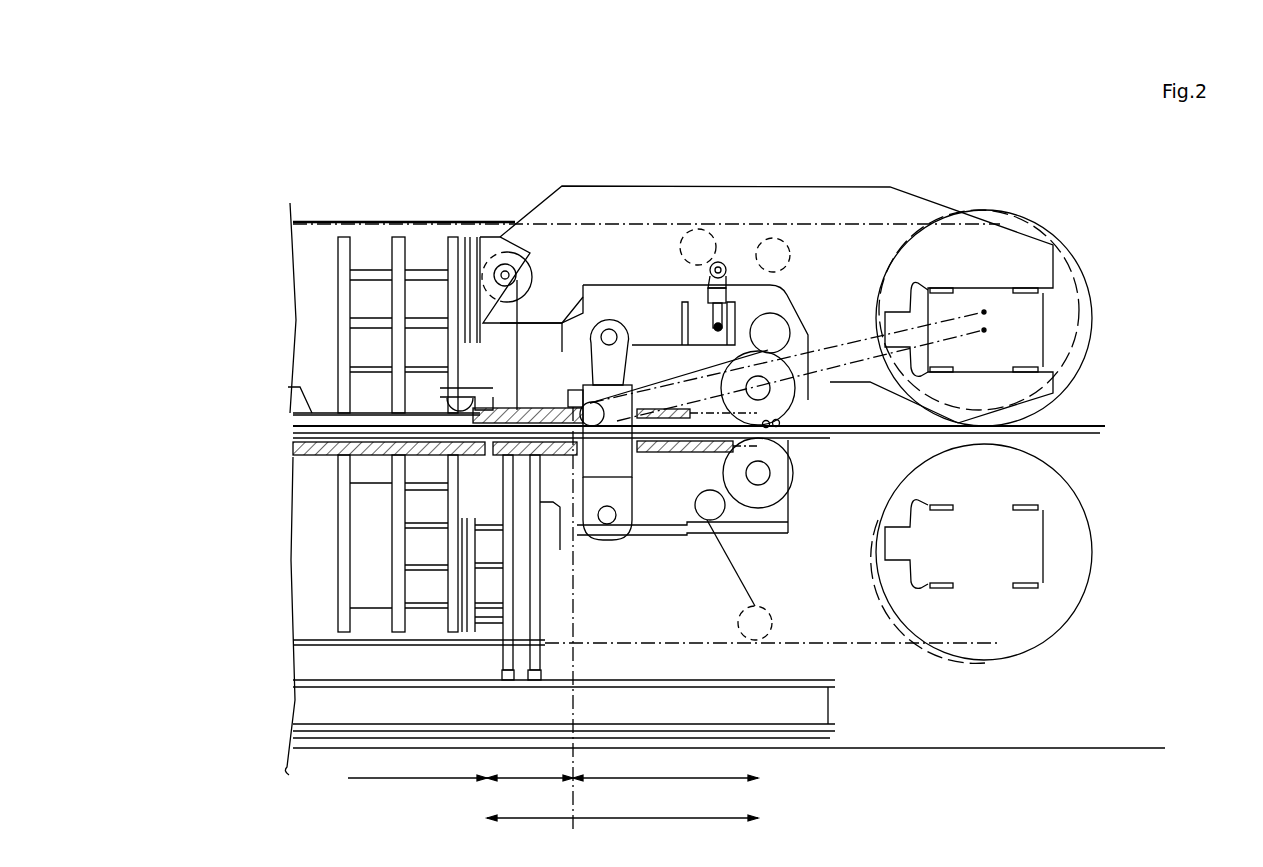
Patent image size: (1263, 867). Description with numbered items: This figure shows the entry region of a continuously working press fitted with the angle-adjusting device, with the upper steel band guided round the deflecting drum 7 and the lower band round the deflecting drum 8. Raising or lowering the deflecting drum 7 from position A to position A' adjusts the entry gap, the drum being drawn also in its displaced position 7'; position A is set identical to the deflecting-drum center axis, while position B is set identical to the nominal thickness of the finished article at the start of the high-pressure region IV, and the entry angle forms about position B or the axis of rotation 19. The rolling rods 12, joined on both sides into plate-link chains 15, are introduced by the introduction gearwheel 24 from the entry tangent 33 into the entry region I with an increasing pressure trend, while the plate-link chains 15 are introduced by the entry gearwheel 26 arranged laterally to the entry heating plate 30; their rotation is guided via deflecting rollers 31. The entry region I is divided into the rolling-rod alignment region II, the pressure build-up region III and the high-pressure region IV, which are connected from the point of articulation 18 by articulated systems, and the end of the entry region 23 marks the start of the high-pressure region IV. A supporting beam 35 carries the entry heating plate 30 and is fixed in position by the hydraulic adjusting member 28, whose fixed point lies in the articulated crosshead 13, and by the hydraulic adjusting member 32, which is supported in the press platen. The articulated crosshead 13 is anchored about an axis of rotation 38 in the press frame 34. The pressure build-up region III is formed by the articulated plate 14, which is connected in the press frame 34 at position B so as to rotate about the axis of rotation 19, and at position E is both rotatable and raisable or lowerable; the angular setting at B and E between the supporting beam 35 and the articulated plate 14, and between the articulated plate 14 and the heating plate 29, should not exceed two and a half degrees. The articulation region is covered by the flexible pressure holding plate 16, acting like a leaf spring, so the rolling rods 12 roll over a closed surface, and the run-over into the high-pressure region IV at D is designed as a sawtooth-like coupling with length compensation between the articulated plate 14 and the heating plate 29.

The deflecting drum 7 is at (1038, 318).
The upper cylinder displaced position 7' is at (1042, 300).
The deflecting drum 8 is at (1035, 553).
The rolling rods 12 is at (1105, 426).
The articulated crosshead 13 is at (766, 349).
The articulated plate 14 is at (540, 410).
The plate-link chains 15 is at (757, 234).
The pressure holding plate 16 is at (670, 347).
The point of articulation 18 is at (563, 410).
The axis of rotation 19 is at (507, 262).
The end of the entry region 23 is at (487, 455).
The introduction gearwheel 24 is at (787, 255).
The entry gearwheel 26 is at (787, 255).
The hydraulic adjusting member 28 is at (698, 248).
The heating plate 29 is at (288, 387).
The entry heating plate 30 is at (640, 382).
The deflecting rollers 31 is at (780, 257).
The hydraulic adjusting member 32 is at (587, 385).
The entry tangent 33 is at (758, 377).
The press frame 34 is at (350, 253).
The supporting beam 35 is at (610, 337).
The axis of rotation 38 is at (504, 220).
The position A is at (994, 223).
The position A' is at (970, 214).
The position B is at (495, 397).
The run-over location D is at (440, 392).
The position E is at (577, 390).
The entry region I is at (622, 807).
The rolling-rod alignment region II is at (665, 766).
The pressure build-up region III is at (530, 766).
The high-pressure region IV is at (417, 766).